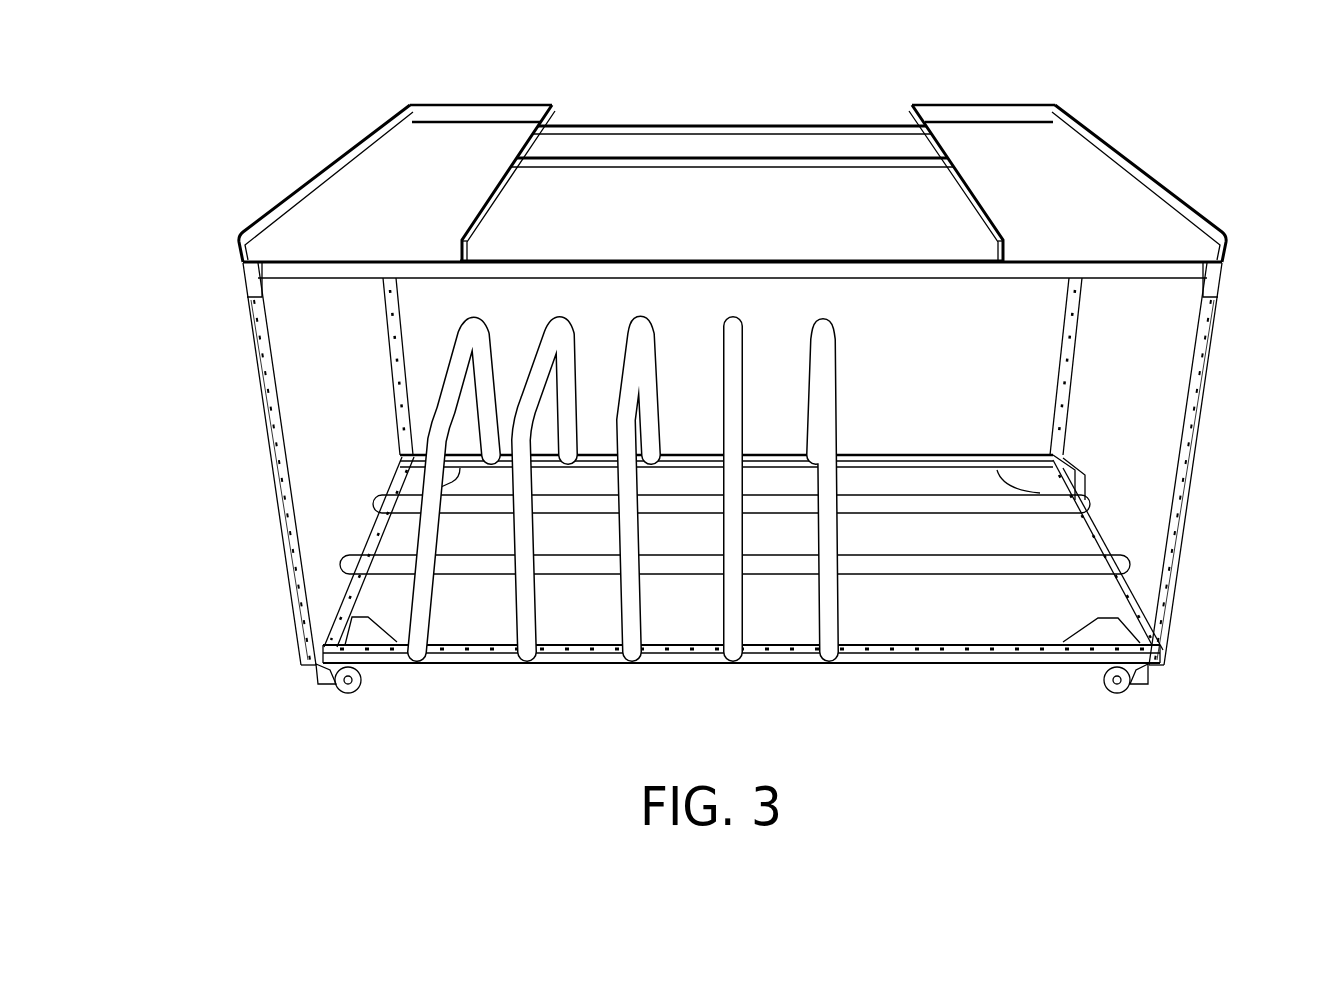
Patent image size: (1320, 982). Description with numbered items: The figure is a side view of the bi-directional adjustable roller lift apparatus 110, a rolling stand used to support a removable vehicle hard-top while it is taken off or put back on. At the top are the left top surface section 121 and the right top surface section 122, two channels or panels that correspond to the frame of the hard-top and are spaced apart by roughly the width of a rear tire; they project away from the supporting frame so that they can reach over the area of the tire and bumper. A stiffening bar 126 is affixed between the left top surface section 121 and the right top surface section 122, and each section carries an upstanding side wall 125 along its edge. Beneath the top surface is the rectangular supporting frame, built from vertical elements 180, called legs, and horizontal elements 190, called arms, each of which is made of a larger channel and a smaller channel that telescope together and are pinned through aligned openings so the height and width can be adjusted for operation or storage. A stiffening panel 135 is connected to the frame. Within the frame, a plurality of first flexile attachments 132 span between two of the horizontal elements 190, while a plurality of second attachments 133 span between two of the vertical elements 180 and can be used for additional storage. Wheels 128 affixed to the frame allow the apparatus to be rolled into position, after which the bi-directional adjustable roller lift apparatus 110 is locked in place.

The bi-directional adjustable roller lift apparatus 110 is at (222, 520).
The left top surface section 121 is at (360, 195).
The right top surface section 122 is at (1100, 195).
The shelf side walls 125 is at (470, 115).
The stiffening bar 126 is at (740, 125).
The wheels 128 is at (335, 695).
The first flexile attachments 132 is at (935, 570).
The second attachments 133 is at (525, 640).
The stiffening panel 135 is at (1117, 637).
The vertical elements (legs) 180 is at (265, 352).
The horizontal elements (arms) 190 is at (752, 266).